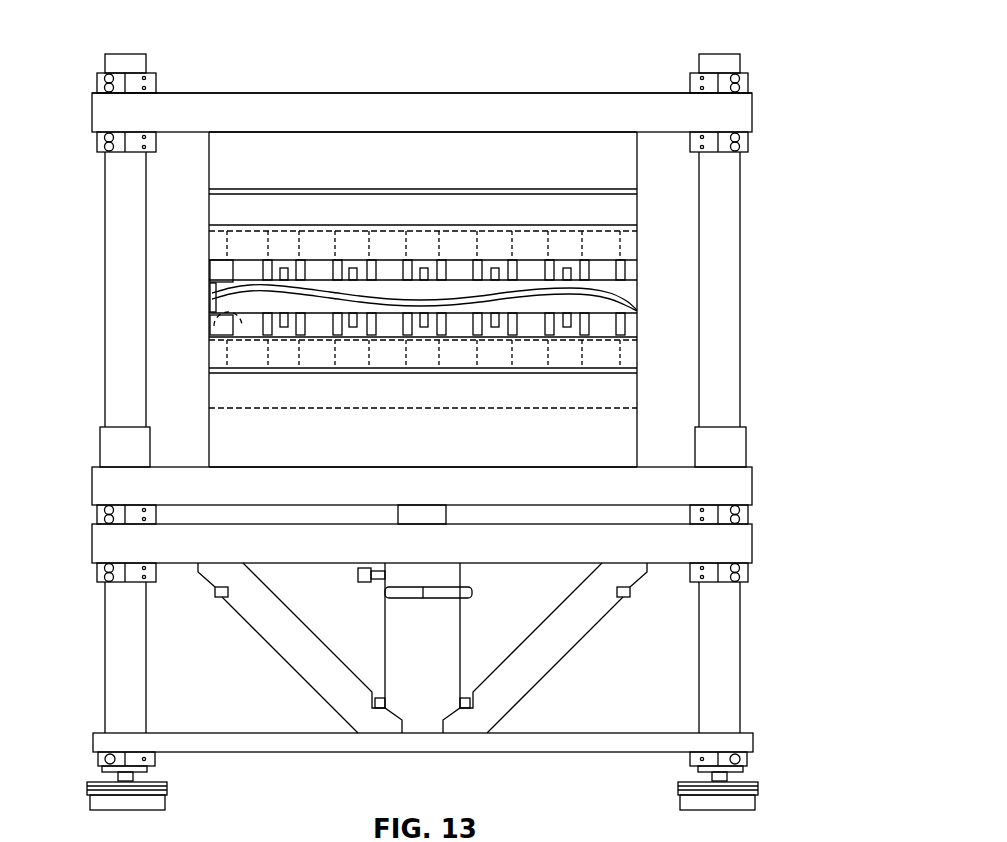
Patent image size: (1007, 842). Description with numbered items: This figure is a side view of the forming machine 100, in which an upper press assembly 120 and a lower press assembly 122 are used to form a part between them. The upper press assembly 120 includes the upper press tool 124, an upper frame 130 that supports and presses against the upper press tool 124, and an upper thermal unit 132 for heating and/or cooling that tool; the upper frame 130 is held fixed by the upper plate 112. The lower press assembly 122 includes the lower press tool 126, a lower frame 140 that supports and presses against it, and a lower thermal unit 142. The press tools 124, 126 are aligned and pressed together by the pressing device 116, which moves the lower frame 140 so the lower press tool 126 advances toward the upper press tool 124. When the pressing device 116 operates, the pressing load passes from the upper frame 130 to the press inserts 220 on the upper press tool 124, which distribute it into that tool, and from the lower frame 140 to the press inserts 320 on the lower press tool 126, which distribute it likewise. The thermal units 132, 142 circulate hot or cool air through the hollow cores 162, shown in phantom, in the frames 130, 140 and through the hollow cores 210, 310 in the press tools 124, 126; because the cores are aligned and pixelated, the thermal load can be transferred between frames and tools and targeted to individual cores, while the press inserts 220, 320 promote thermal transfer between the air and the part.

The forming machine 100 is at (645, 45).
The upper plate 112 is at (275, 108).
The pressing device 116 is at (410, 637).
The upper press assembly 120 is at (662, 182).
The lower press assembly 122 is at (670, 396).
The upper press tool 124 is at (630, 283).
The lower press tool 126 is at (630, 320).
The upper frame 130 is at (630, 200).
The upper thermal unit 132 is at (228, 178).
The lower frame 140 is at (630, 388).
The lower thermal unit 142 is at (230, 433).
The hollow cores 162 is at (228, 357).
The hollow cores 210 is at (207, 268).
The press inserts 220 is at (208, 293).
The hollow cores 310 is at (207, 325).
The press inserts 320 is at (209, 314).